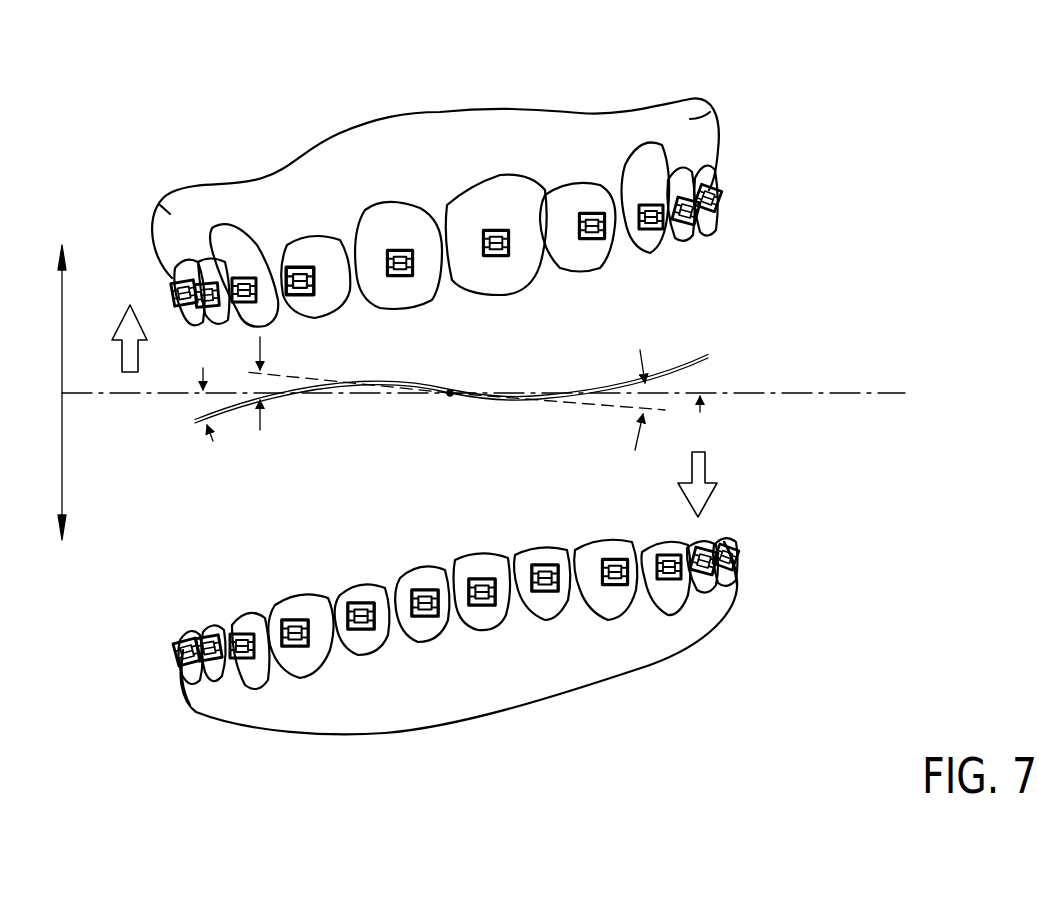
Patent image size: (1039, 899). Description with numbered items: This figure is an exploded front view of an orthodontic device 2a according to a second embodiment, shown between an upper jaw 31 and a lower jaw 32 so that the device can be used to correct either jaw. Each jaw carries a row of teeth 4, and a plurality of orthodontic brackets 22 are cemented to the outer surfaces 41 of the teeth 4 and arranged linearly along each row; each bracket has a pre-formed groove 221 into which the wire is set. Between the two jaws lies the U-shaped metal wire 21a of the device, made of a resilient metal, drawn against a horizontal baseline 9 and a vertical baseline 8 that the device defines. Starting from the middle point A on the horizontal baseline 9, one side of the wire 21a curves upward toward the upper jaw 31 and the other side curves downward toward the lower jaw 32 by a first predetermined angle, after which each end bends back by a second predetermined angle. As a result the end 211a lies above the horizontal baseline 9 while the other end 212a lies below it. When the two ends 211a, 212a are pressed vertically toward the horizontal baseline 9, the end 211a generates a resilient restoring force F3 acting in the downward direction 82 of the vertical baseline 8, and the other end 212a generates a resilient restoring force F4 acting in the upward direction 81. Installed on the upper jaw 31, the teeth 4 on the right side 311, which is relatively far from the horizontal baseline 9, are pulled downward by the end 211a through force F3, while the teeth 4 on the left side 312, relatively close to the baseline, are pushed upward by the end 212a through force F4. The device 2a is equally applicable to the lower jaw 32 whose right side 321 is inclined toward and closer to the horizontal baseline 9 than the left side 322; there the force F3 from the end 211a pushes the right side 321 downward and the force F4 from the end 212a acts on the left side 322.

The upper jaw 31 is at (418, 107).
The right side of the upper jaw 311 is at (710, 112).
The left side of the upper jaw 312 is at (160, 205).
The lower jaw 32 is at (413, 695).
The right side of the lower jaw 321 is at (729, 591).
The left side of the lower jaw 322 is at (197, 690).
The teeth 4 is at (455, 425).
The outer surface 41 is at (377, 223).
The orthodontic brackets 22 is at (455, 425).
The groove 221 is at (617, 235).
The orthodontic device 2a is at (322, 418).
The U-shaped metal wire 21a is at (497, 392).
The end of the U-shaped metal wire 211a is at (676, 360).
The other end of the U-shaped metal wire 212a is at (197, 424).
The horizontal baseline 9 is at (893, 392).
The middle point A is at (450, 396).
The vertical baseline 8 is at (63, 357).
The upward direction 81 is at (63, 262).
The downward direction 82 is at (63, 530).
The resilient restoring force F3 is at (682, 484).
The resilient restoring force F4 is at (144, 340).